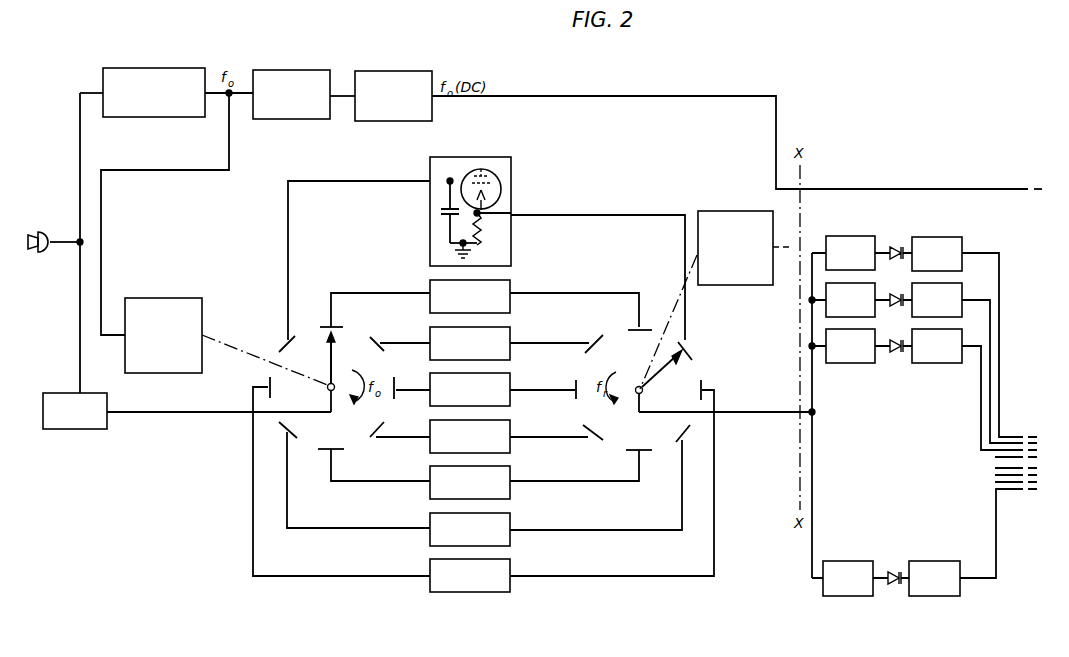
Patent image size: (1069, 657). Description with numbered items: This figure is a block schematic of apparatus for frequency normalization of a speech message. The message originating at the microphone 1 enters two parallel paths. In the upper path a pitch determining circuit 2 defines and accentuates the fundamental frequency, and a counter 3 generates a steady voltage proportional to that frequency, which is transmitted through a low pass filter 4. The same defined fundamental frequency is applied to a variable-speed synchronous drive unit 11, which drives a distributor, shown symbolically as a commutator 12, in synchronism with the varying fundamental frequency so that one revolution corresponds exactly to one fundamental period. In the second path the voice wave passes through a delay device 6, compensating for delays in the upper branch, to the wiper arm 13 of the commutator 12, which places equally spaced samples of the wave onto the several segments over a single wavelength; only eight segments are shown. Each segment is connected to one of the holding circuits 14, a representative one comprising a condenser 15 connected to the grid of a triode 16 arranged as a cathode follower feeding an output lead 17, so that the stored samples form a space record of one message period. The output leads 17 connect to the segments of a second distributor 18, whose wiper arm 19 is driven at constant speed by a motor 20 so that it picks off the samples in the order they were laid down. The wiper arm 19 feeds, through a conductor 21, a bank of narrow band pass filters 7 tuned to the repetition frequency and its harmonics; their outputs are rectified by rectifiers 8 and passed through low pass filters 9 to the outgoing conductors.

The microphone 1 is at (42, 233).
The pitch determining circuit 2 is at (135, 68).
The counter 3 is at (273, 70).
The low pass filter 4 is at (374, 71).
The delay device 6 is at (75, 429).
The band pass filters 7 is at (843, 236).
The rectifiers 8 is at (894, 245).
The low pass filters 9 is at (927, 237).
The variable-speed synchronous drive unit 11 is at (181, 298).
The commutator 12 is at (320, 359).
The wiper arm 13 is at (337, 351).
The holding circuits 14 is at (511, 243).
The condenser 15 is at (441, 216).
The triode 16 is at (500, 187).
The output lead 17 is at (538, 216).
The second distributor 18 is at (640, 359).
The wiper arm 19 is at (651, 385).
The motor 20 is at (732, 285).
The conductor 21 is at (734, 412).